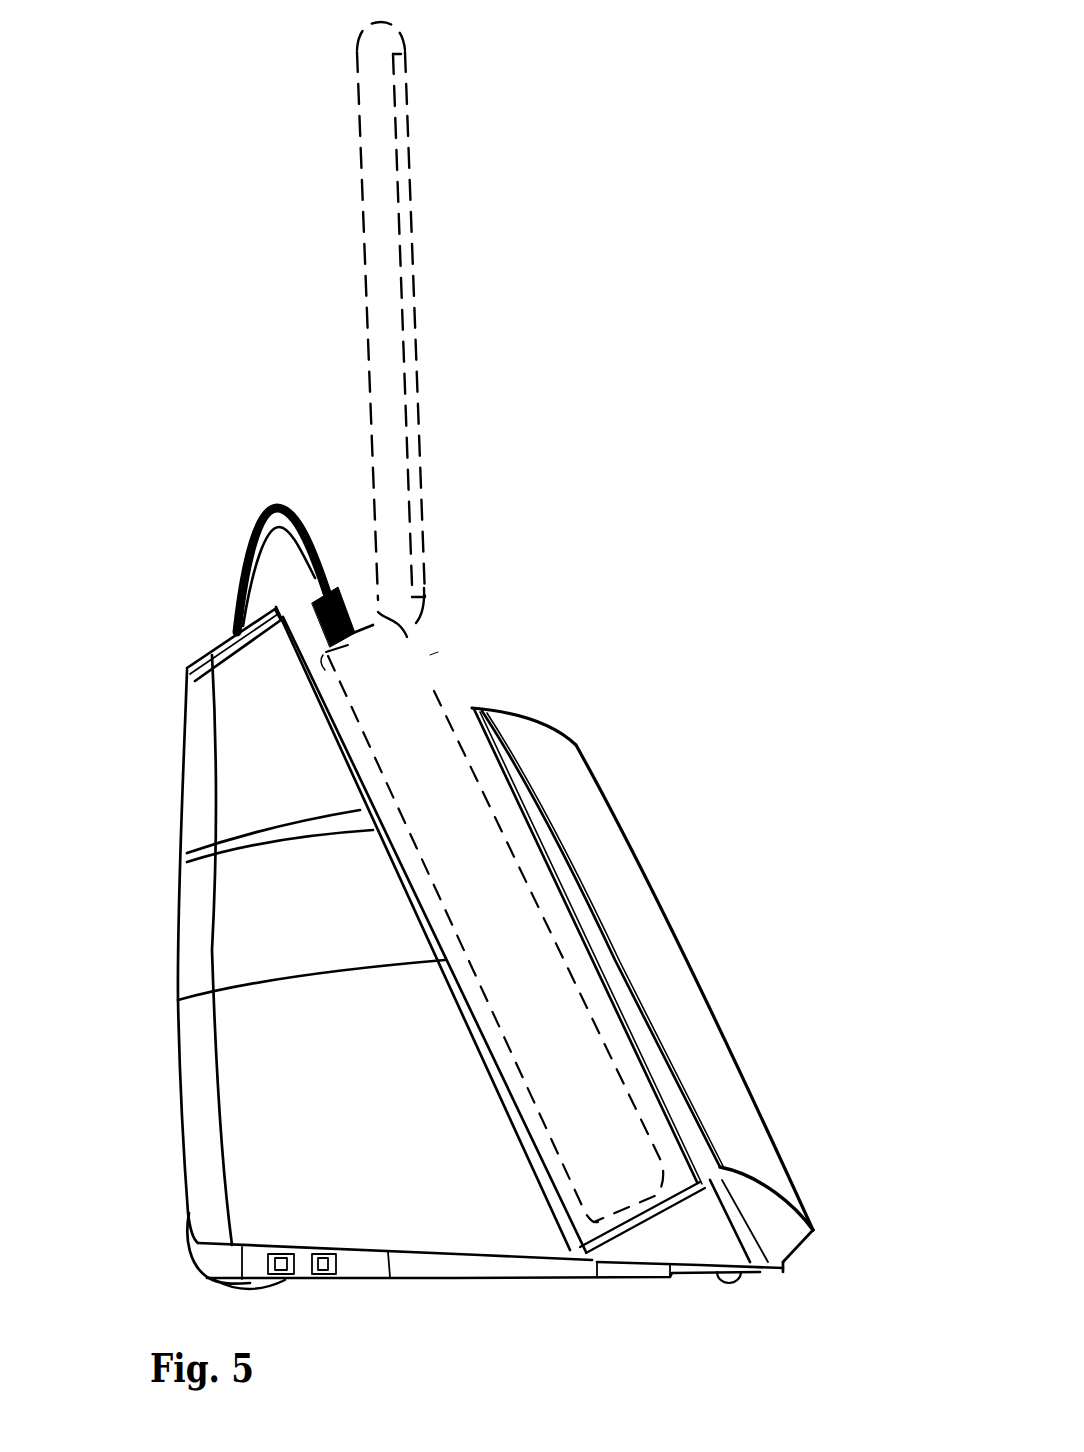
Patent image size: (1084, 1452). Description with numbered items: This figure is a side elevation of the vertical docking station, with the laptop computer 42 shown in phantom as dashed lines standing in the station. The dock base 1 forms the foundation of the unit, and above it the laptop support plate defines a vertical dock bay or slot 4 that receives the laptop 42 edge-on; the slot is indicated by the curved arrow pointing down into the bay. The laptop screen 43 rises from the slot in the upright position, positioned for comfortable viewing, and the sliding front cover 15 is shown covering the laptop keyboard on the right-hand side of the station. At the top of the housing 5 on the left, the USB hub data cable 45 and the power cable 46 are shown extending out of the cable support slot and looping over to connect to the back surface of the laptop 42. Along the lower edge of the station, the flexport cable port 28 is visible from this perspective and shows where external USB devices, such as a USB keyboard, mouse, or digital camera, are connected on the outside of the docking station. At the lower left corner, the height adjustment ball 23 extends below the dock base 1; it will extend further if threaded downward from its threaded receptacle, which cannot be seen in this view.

The dock base 1 is at (673, 1237).
The vertical dock bay or slot 4 is at (452, 698).
The housing 5 is at (262, 785).
The sliding front cover 15 is at (620, 905).
The height adjustment ball 23 is at (213, 1265).
The flexport cable port 28 is at (320, 1272).
The laptop computer 42 is at (425, 657).
The laptop screen 43 is at (388, 411).
The USB hub data cable 45 is at (258, 513).
The power cable 46 is at (247, 548).